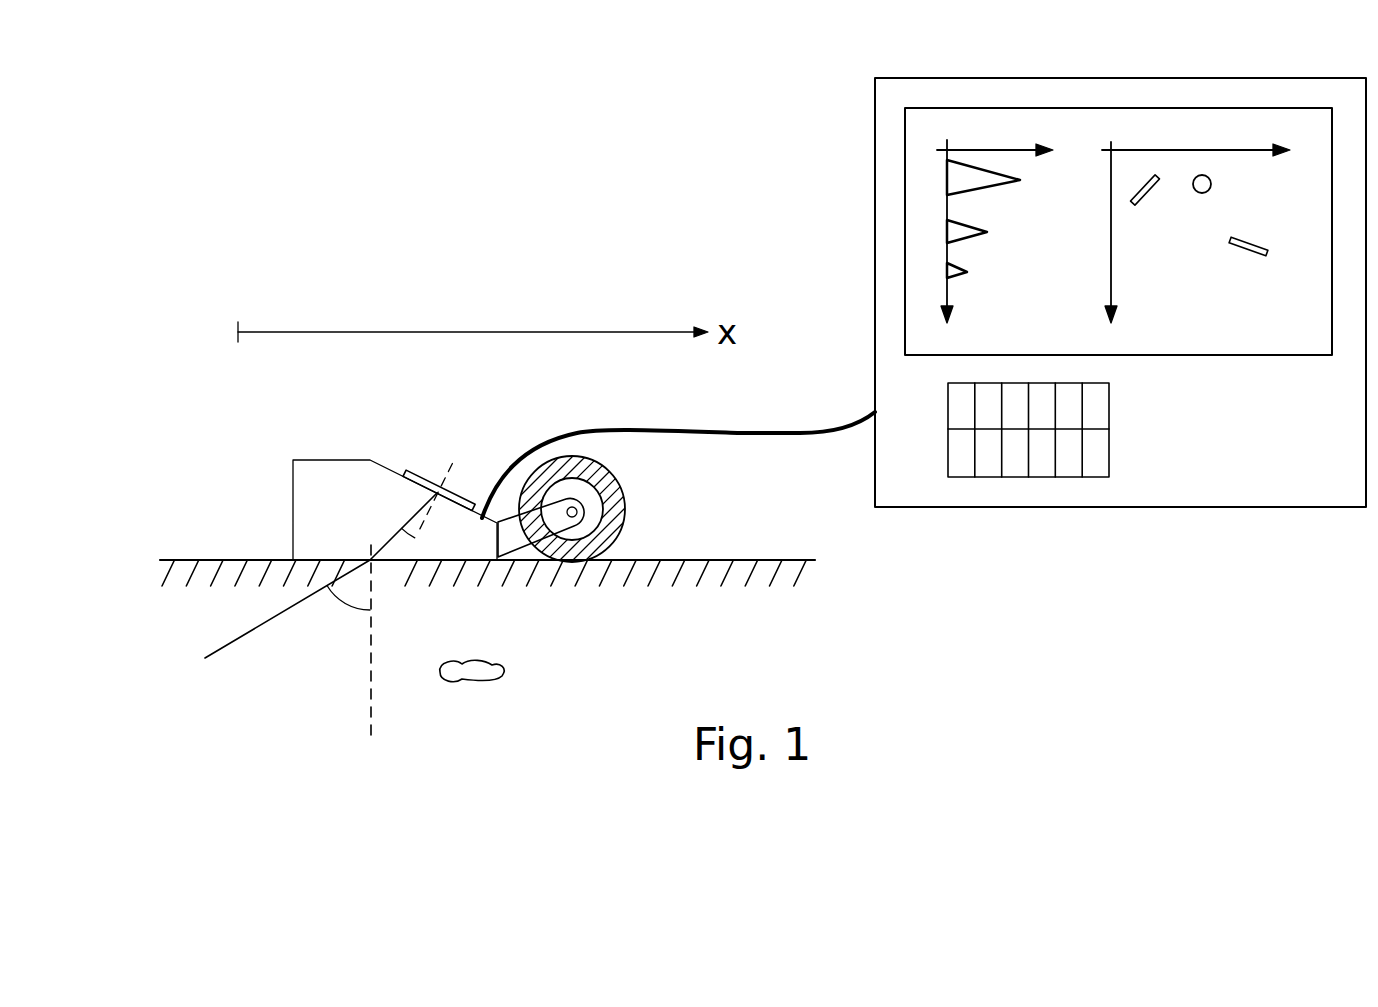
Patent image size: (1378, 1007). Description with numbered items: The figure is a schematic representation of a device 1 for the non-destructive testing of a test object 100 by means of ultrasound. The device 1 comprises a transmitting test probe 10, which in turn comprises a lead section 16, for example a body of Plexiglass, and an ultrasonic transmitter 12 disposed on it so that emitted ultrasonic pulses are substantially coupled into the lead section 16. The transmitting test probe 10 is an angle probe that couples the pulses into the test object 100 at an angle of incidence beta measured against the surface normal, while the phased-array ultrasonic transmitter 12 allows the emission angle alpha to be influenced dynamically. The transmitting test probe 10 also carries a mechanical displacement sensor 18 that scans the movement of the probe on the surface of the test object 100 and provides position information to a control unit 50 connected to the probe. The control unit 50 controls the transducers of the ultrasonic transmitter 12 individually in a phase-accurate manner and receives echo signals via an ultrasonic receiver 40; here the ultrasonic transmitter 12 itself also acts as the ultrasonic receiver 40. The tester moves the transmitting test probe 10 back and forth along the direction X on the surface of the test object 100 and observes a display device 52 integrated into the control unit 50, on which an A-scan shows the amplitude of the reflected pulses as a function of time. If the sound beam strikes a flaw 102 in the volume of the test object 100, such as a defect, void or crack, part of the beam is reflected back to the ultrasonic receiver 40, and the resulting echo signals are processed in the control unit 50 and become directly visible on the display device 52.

The device 1 is at (898, 623).
The transmitting test probe 10 is at (281, 431).
The ultrasonic transmitter 12 is at (501, 454).
The ultrasonic receiver 40 is at (455, 489).
The lead section 16 is at (328, 478).
The displacement sensor 18 is at (592, 508).
The control unit 50 is at (1288, 470).
The display device 52 is at (1203, 315).
The test object 100 is at (645, 627).
The flaw 102 is at (478, 670).